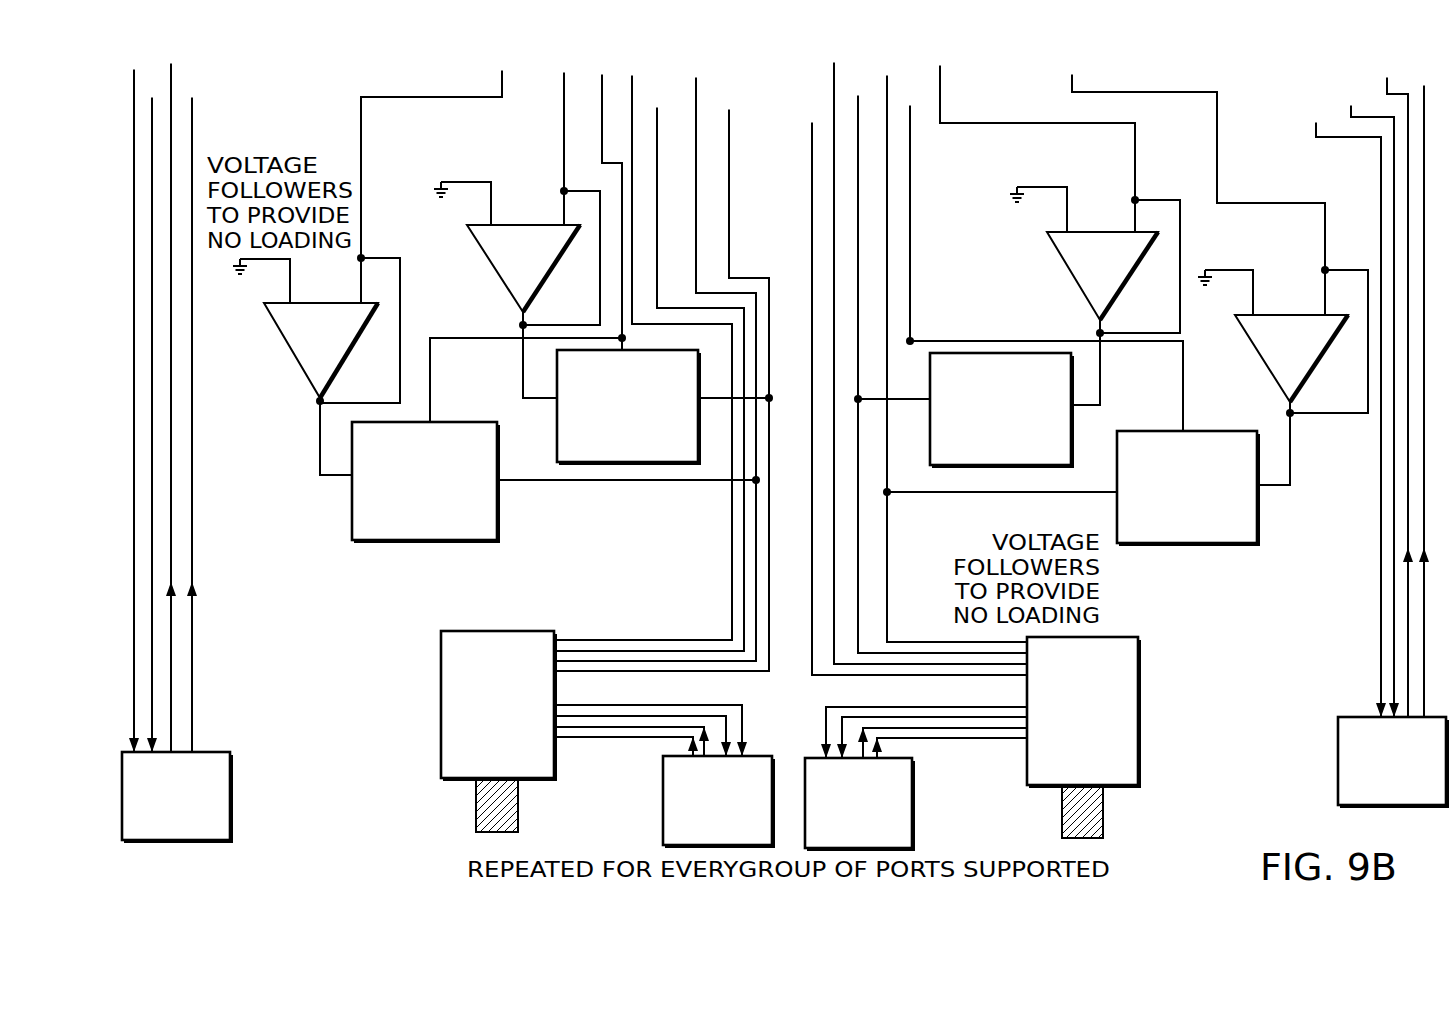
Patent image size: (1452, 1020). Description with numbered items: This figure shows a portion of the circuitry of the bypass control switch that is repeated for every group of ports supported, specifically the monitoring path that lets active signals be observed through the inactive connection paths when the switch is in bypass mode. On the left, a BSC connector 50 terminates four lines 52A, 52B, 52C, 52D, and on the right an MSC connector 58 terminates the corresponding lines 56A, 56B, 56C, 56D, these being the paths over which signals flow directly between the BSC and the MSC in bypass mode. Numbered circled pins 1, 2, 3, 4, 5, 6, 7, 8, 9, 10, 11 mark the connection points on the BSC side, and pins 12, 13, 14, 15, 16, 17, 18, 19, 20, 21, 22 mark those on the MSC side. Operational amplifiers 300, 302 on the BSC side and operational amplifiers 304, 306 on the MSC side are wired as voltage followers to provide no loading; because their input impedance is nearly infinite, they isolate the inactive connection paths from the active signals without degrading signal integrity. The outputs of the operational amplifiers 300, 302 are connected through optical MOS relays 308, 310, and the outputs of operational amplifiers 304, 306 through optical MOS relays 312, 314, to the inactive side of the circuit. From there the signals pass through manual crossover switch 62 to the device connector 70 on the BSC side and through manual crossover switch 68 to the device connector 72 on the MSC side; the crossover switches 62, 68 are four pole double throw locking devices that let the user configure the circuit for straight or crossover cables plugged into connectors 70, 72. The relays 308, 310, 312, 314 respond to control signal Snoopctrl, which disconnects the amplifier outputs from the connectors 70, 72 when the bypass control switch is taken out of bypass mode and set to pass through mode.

The pin 1 signal line 1 is at (134, 173).
The pin 2 signal line 2 is at (152, 187).
The pin 3 signal line 3 is at (171, 170).
The pin 4 signal line 4 is at (192, 187).
The pin 5 signal line 5 is at (436, 175).
The pin 6 signal line 6 is at (564, 137).
The pin 7 signal line 7 is at (528, 236).
The pin 8 signal line 8 is at (643, 346).
The pin 9 signal line 9 is at (649, 367).
The pin 10 signal line 10 is at (657, 357).
The pin 11 signal line 11 is at (663, 378).
The pin 12 signal line 12 is at (914, 387).
The pin 13 signal line 13 is at (925, 351).
The pin 14 signal line 14 is at (937, 362).
The pin 15 signal line 15 is at (951, 347).
The pin 16 signal line 16 is at (1041, 256).
The pin 17 signal line 17 is at (1034, 137).
The pin 18 signal line 18 is at (1195, 183).
The pin 19 signal line 19 is at (1343, 199).
The pin 20 signal line 20 is at (1367, 191).
The pin 21 signal line 21 is at (1392, 177).
The pin 22 signal line 22 is at (1424, 181).
The RJ-45 connector 50 is at (230, 806).
The line 52A is at (133, 735).
The line 52B is at (151, 695).
The line 52C is at (170, 657).
The line 52D is at (192, 618).
The line 56A is at (1423, 698).
The line 56B is at (1407, 660).
The line 56C is at (1393, 622).
The line 56D is at (1379, 585).
The RJ-45 connector 58 is at (1338, 747).
The manual crossover switch 62 is at (440, 699).
The manual crossover switch 68 is at (1138, 710).
The RJ-45 connector 70 is at (663, 806).
The RJ-45 connector 72 is at (912, 812).
The operational amplifier 300 is at (287, 338).
The operational amplifier 302 is at (490, 258).
The operational amplifier 304 is at (1067, 268).
The operational amplifier 306 is at (1267, 357).
The optical MOS relay 308 is at (385, 541).
The optical MOS relay 310 is at (557, 455).
The optical MOS relay 312 is at (1071, 430).
The optical MOS relay 314 is at (1257, 518).